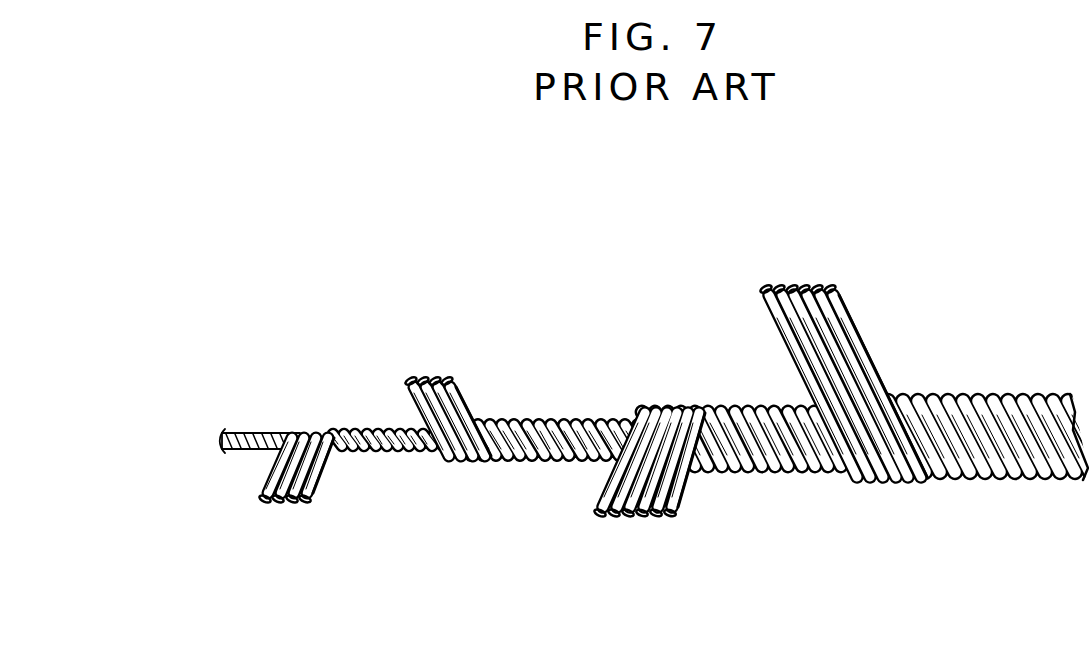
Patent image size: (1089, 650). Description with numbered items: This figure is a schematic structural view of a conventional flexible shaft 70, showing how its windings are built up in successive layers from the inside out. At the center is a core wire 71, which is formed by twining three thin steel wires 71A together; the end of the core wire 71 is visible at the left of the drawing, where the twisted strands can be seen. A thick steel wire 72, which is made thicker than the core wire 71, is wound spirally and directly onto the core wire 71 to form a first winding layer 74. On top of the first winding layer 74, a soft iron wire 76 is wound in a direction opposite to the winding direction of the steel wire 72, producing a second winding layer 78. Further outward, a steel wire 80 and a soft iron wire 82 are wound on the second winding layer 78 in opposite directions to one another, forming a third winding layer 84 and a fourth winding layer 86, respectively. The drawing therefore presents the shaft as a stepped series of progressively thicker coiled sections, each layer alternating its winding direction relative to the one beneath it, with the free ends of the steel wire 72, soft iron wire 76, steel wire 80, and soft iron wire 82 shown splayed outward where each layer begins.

The flexible shaft 70 is at (622, 256).
The core wire 71 is at (264, 429).
The thin steel wires 71A is at (242, 451).
The thick steel wire 72 is at (298, 427).
The first winding layer 74 is at (361, 453).
The soft iron wire 76 is at (463, 464).
The second winding layer 78 is at (549, 416).
The steel wire 80 is at (677, 405).
The soft iron wire 82 is at (885, 487).
The third winding layer 84 is at (758, 474).
The fourth winding layer 86 is at (972, 393).